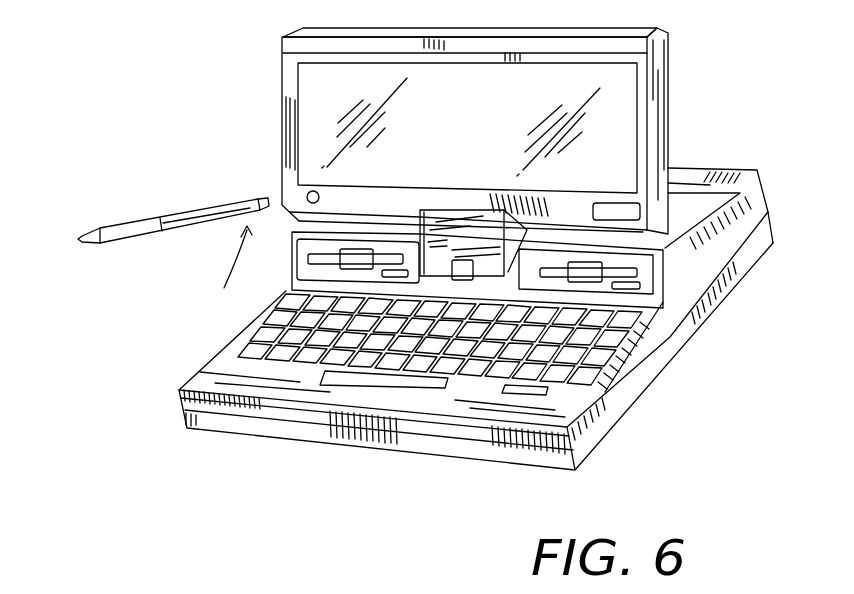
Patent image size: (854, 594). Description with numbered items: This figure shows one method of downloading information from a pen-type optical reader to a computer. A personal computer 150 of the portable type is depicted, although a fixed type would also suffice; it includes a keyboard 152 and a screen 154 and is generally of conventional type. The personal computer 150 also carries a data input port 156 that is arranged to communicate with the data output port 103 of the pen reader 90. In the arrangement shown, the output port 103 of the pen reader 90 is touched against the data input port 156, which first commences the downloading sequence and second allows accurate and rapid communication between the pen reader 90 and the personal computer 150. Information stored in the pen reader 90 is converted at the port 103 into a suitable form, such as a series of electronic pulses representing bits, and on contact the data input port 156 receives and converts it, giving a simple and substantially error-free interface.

The personal computer 150 is at (640, 27).
The screen 154 is at (668, 107).
The data input port 156 is at (306, 193).
The keyboard 152 is at (607, 358).
The pen reader 90 is at (122, 224).
The data output port 103 is at (224, 288).